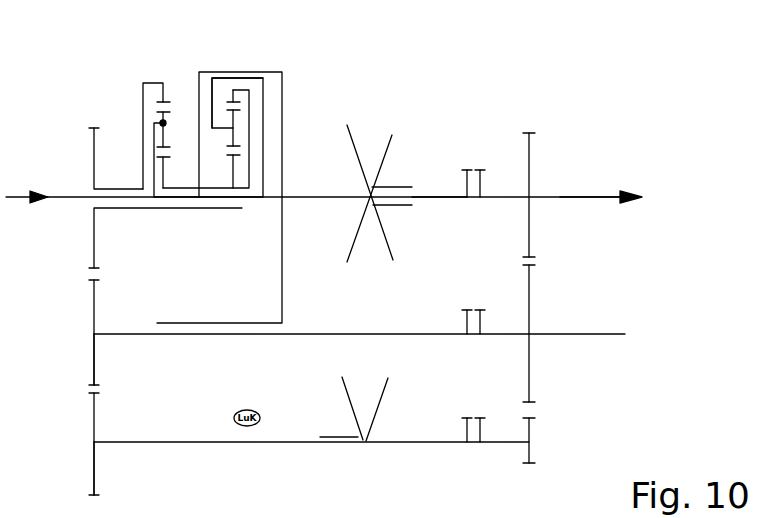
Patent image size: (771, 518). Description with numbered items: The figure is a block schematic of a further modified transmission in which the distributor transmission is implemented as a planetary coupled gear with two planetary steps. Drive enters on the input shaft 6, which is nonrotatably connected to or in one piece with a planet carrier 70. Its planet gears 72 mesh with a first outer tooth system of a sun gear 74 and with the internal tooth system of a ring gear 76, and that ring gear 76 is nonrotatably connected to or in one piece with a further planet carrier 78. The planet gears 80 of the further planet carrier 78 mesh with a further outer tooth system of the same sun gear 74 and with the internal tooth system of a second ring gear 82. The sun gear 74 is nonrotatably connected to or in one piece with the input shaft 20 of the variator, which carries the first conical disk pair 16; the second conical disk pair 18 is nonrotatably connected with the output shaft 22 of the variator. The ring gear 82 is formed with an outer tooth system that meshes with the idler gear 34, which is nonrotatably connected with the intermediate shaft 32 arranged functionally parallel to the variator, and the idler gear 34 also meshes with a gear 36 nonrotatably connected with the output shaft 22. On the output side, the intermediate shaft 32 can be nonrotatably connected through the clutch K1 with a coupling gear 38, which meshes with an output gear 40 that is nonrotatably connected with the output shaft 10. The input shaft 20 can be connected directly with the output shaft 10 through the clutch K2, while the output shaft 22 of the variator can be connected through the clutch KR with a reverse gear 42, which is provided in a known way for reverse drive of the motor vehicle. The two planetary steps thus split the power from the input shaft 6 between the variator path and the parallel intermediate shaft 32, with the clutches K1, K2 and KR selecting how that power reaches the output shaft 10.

The input shaft 6 is at (8, 197).
The output shaft 10 is at (588, 199).
The first conical disk pair 16 is at (377, 134).
The second conical disk pair 18 is at (349, 458).
The input shaft of the variator 20 is at (437, 199).
The output shaft of the variator 22 is at (410, 444).
The intermediate shaft 32 is at (345, 333).
The idler gear 34 is at (94, 356).
The gear 36 is at (94, 466).
The coupling gear 38 is at (532, 317).
The output gear 40 is at (532, 173).
The reverse gear 42 is at (535, 435).
The planet carrier 70 is at (264, 108).
The planet gears 72 is at (236, 138).
The sun gear 74 is at (210, 192).
The ring gear 76 is at (240, 90).
The further planet carrier 78 is at (160, 124).
The planet gears of the further planet carrier 80 is at (166, 118).
The ring gear 82 is at (158, 83).
The clutch K1 is at (473, 305).
The clutch K2 is at (473, 167).
The clutch KR is at (475, 412).